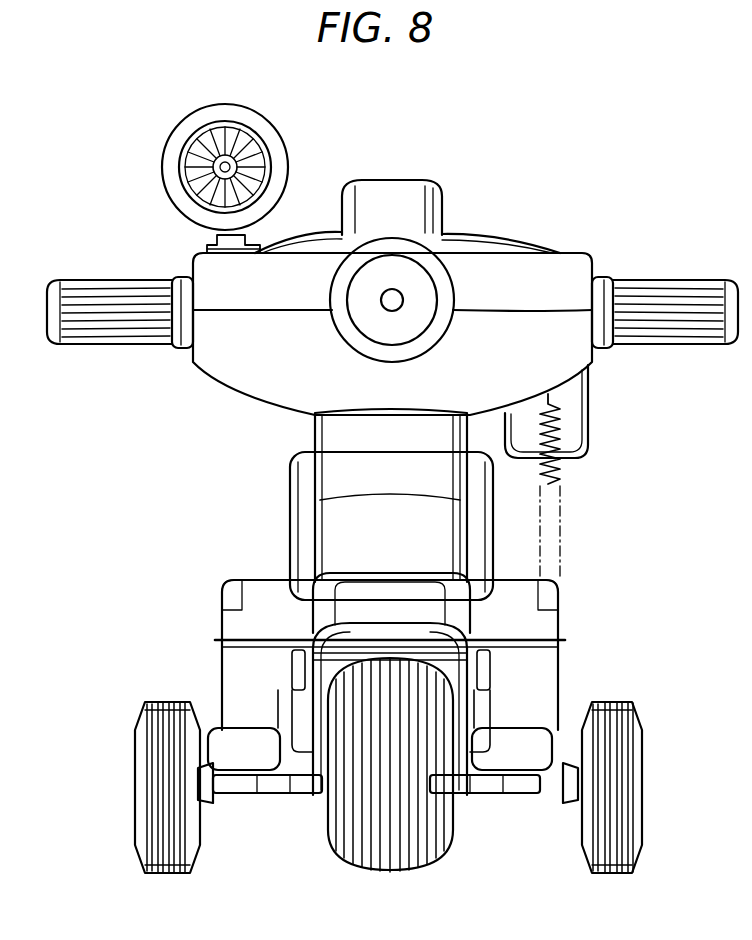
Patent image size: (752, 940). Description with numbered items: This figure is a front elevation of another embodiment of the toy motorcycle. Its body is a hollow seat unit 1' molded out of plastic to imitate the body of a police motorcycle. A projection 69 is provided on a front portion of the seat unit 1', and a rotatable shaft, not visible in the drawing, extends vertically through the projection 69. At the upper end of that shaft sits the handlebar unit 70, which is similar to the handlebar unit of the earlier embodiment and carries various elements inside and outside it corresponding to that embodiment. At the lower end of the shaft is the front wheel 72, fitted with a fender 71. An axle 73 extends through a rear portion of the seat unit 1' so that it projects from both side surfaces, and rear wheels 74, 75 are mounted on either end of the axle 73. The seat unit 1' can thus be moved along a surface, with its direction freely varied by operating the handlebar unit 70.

The handlebar unit 70 is at (557, 260).
The projection 69 is at (447, 517).
The seat unit 1' is at (402, 651).
The fender 71 is at (435, 646).
The front wheel 72 is at (450, 842).
The axle 73 is at (237, 793).
The rear wheel 74 is at (622, 701).
The rear wheel 75 is at (156, 700).